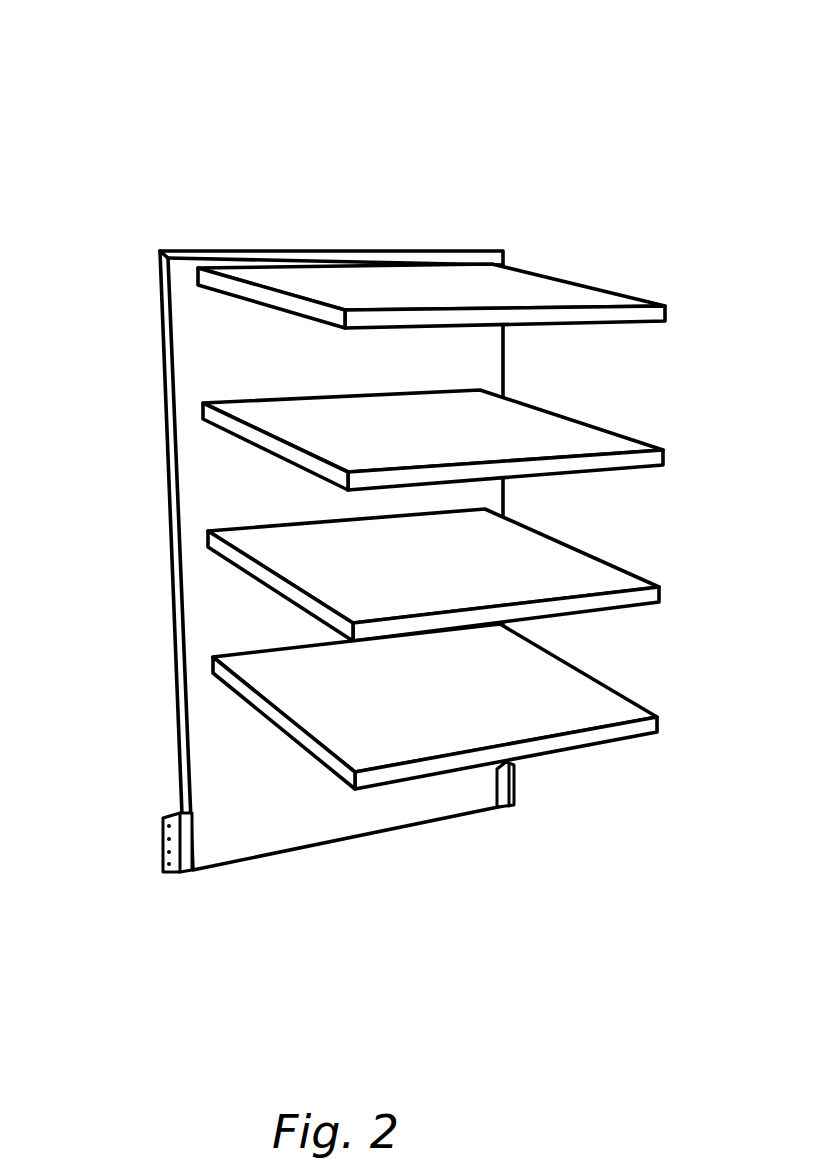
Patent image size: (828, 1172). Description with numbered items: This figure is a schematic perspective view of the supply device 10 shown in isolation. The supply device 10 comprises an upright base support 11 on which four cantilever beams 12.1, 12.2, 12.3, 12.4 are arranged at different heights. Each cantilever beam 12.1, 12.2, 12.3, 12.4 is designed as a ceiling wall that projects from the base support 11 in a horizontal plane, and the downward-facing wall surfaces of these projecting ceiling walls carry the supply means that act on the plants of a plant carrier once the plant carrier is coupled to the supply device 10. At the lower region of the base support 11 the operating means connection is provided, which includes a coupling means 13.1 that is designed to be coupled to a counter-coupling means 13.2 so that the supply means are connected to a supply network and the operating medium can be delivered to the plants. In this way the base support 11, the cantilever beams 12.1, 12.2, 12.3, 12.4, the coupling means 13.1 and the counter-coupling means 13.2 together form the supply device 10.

The supply device 10 is at (163, 212).
The base support 11 is at (273, 805).
The cantilever beam 12.1 is at (525, 713).
The cantilever beam 12.2 is at (525, 578).
The cantilever beam 12.3 is at (525, 430).
The cantilever beam 12.4 is at (525, 294).
The coupling means 13.1 is at (165, 815).
The counter-coupling means 13.2 is at (512, 788).